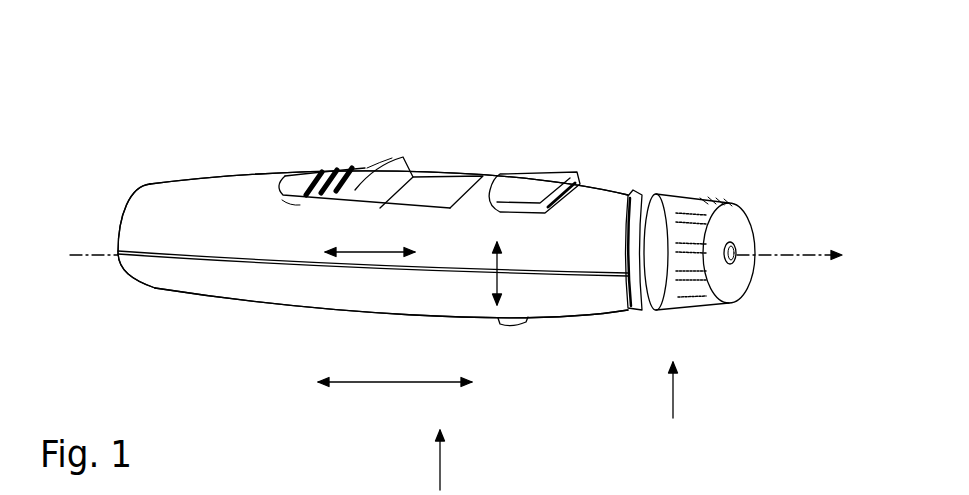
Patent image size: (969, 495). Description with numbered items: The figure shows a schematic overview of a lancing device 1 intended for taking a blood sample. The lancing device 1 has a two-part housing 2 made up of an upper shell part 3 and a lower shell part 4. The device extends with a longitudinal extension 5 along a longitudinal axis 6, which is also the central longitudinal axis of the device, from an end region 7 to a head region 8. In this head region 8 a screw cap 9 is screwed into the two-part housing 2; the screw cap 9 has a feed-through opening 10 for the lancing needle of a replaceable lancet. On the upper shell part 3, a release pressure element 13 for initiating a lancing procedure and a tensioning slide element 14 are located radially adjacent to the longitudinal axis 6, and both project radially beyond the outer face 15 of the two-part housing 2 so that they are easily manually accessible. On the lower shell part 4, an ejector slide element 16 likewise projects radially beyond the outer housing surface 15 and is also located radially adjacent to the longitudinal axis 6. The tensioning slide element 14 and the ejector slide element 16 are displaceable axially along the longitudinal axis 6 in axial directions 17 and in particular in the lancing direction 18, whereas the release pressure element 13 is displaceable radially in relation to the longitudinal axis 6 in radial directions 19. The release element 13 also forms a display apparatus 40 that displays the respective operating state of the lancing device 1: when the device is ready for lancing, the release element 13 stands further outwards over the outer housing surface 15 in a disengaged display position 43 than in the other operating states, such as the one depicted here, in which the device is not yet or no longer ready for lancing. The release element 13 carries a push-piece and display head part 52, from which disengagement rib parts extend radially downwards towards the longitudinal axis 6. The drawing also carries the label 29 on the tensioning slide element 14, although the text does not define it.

The lancing device 1 is at (566, 75).
The two-part housing 2 is at (106, 198).
The upper shell part 3 is at (172, 198).
The lower shell part 4 is at (150, 277).
The longitudinal extension 5 is at (382, 384).
The longitudinal axis 6 is at (83, 262).
The end region 7 is at (116, 297).
The head region 8 is at (675, 404).
The screw cap 9 is at (682, 208).
The feed-through opening 10 is at (731, 265).
The release pressure element 13 is at (512, 183).
The tensioning slide element 14 is at (296, 185).
The outer face of the two-part housing 15 is at (226, 198).
The ejector slide element 16 is at (520, 326).
The axial directions 17 is at (360, 254).
The lancing direction 18 is at (778, 255).
The radial directions 19 is at (497, 258).
The raised actuating nub 29 is at (351, 145).
The display apparatus 40 is at (578, 150).
The disengaged display position 43 is at (439, 462).
The push-piece and display head part 52 is at (534, 182).